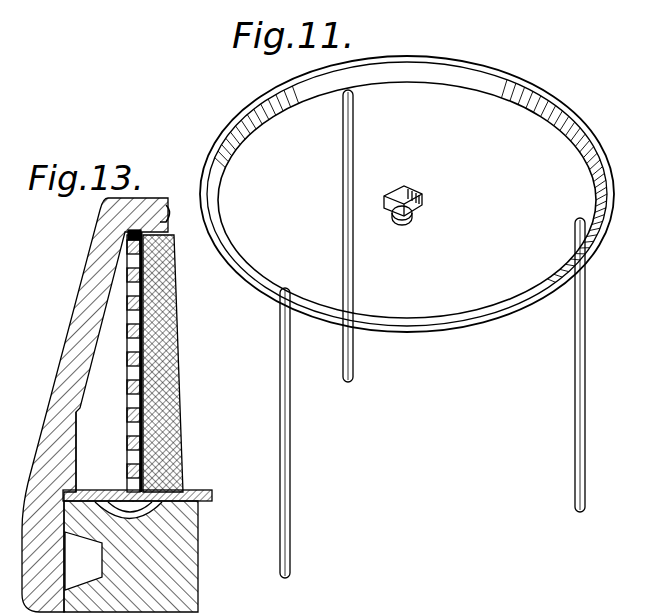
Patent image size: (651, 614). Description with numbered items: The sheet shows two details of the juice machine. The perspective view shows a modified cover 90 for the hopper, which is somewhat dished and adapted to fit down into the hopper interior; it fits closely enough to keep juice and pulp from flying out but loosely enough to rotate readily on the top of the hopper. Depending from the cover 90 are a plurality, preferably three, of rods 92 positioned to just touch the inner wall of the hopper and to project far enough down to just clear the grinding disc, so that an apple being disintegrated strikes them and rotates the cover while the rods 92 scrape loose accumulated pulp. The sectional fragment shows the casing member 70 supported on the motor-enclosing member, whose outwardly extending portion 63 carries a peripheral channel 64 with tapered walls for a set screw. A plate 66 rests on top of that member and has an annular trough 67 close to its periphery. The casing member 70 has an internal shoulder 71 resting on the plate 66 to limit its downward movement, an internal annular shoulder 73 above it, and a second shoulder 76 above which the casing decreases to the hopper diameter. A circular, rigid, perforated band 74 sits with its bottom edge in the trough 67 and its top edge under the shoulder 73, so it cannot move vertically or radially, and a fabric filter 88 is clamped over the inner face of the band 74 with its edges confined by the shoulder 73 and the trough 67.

In FIG. 11, the cover 90 is at (407, 194).
In FIG. 11, the rods 92 is at (354, 346).
In FIG. 13, the casing member 70 is at (52, 380).
In FIG. 13, the internal annular shoulder 73 is at (130, 226).
In FIG. 13, the second shoulder 76 is at (171, 212).
In FIG. 13, the internal shoulder 71 is at (78, 485).
In FIG. 13, the perforated band 74 is at (127, 412).
In FIG. 13, the fabric filter 88 is at (160, 366).
In FIG. 13, the plate 66 is at (213, 496).
In FIG. 13, the annular trough 67 is at (148, 528).
In FIG. 13, the outwardly extending portion 63 is at (176, 583).
In FIG. 13, the peripheral channel 64 is at (83, 561).